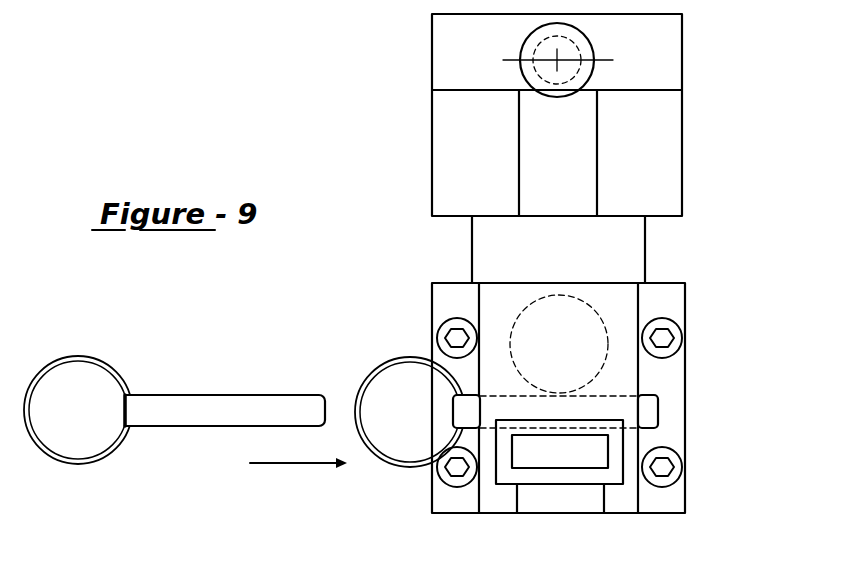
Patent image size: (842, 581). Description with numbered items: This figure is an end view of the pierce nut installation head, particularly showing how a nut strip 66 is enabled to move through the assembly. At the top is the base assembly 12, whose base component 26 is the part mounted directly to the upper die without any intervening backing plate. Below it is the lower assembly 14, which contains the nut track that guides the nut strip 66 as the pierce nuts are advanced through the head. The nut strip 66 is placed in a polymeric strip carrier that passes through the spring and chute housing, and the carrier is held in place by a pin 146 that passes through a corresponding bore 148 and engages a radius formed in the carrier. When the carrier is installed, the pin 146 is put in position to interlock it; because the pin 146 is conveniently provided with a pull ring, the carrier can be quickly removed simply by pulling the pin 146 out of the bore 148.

The base assembly 12 is at (682, 130).
The base component 26 is at (682, 203).
The lower assembly 14 is at (687, 437).
The nut strip 66 is at (522, 475).
The bore 148 is at (658, 400).
The pin 146 is at (195, 427).